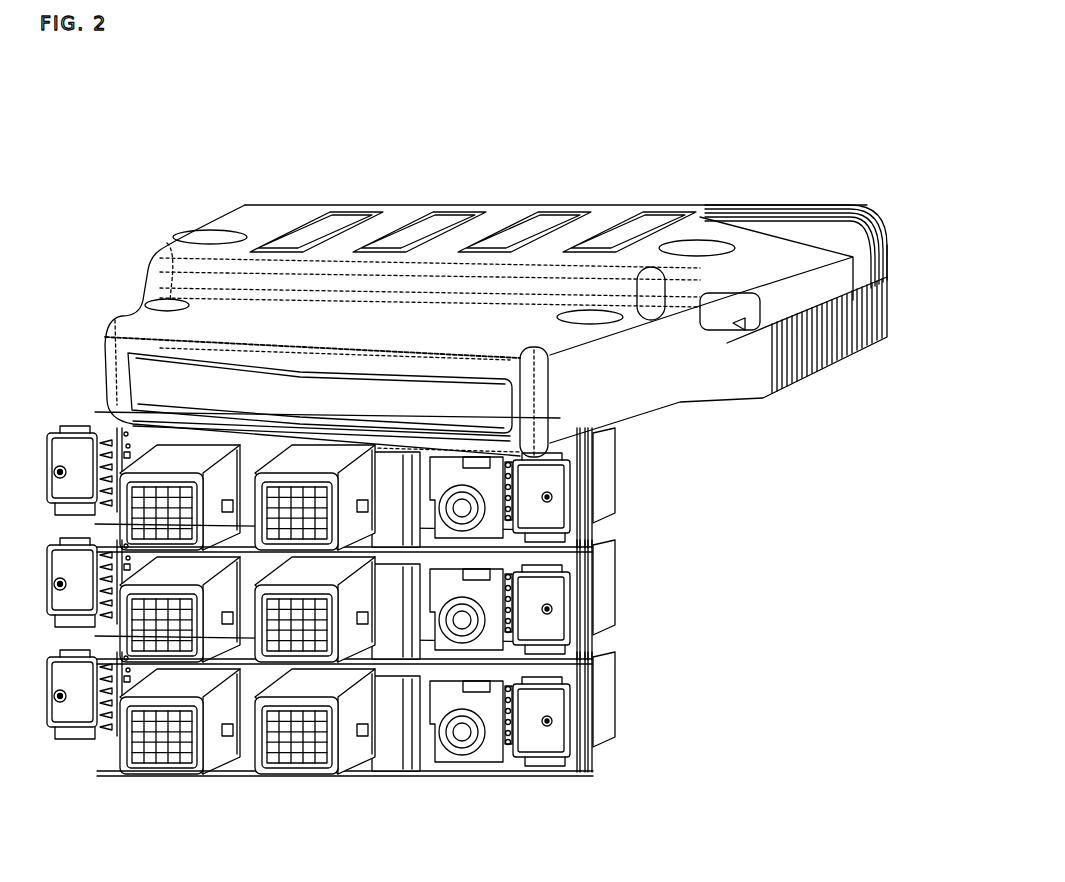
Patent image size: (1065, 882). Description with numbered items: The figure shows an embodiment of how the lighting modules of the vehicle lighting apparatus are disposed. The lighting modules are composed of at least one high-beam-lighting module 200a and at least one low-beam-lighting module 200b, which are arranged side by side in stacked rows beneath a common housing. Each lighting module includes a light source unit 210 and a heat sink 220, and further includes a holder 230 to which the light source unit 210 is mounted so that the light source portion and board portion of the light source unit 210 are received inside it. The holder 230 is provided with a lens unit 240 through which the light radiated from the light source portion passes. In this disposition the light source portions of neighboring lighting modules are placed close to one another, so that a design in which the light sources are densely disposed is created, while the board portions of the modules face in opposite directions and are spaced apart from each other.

The high-beam-lighting module 200a is at (250, 799).
The low-beam-lighting module 200b is at (595, 799).
The light source unit 210 is at (455, 471).
The heat sink 220 is at (600, 473).
The holder 230 is at (392, 497).
The lens unit 240 is at (287, 495).